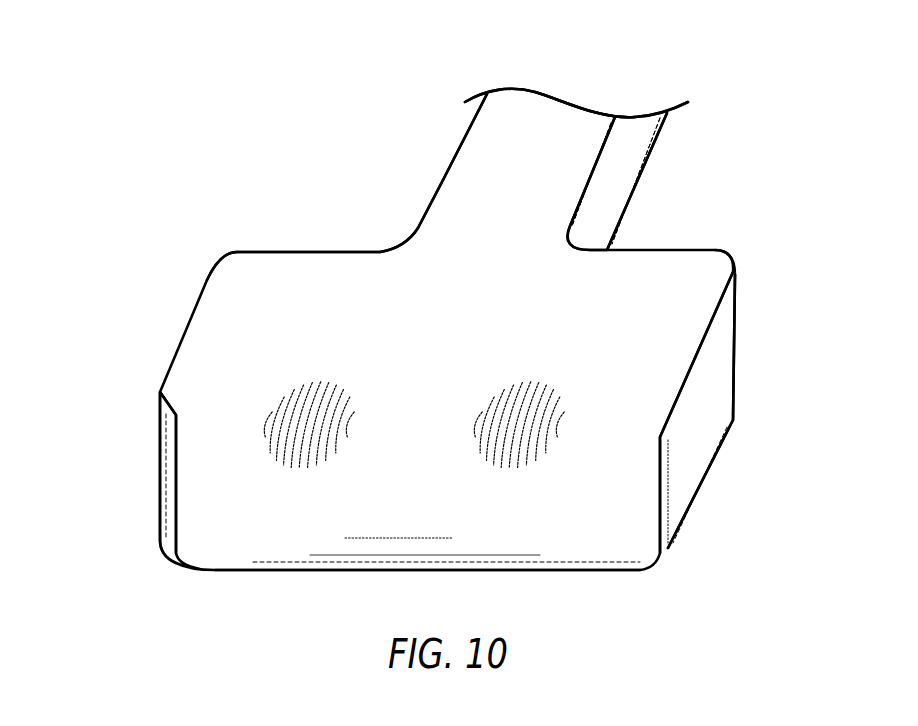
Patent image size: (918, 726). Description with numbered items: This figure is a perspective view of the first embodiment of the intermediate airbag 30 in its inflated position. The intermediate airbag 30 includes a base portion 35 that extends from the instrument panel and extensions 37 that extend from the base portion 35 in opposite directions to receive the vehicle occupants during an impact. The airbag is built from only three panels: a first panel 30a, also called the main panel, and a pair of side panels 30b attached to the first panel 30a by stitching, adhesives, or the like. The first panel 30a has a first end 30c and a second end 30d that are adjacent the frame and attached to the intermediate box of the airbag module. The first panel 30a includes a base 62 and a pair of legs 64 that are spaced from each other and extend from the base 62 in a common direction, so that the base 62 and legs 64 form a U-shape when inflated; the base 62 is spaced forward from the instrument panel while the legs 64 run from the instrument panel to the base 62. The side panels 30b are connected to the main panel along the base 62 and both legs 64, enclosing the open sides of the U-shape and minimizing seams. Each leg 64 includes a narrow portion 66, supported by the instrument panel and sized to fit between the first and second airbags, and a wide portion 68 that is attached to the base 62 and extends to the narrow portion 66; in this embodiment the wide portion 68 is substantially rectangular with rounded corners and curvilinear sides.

The intermediate airbag 30 is at (270, 83).
The first panel 30a is at (317, 265).
The side panels 30b is at (173, 360).
The first end 30c is at (517, 87).
The second end 30d is at (680, 108).
The base portion 35 is at (483, 167).
The extensions 37 is at (250, 310).
The base 62 is at (617, 513).
The legs 64 is at (635, 185).
The narrow portion 66 is at (553, 120).
The wide portion 68 is at (412, 262).